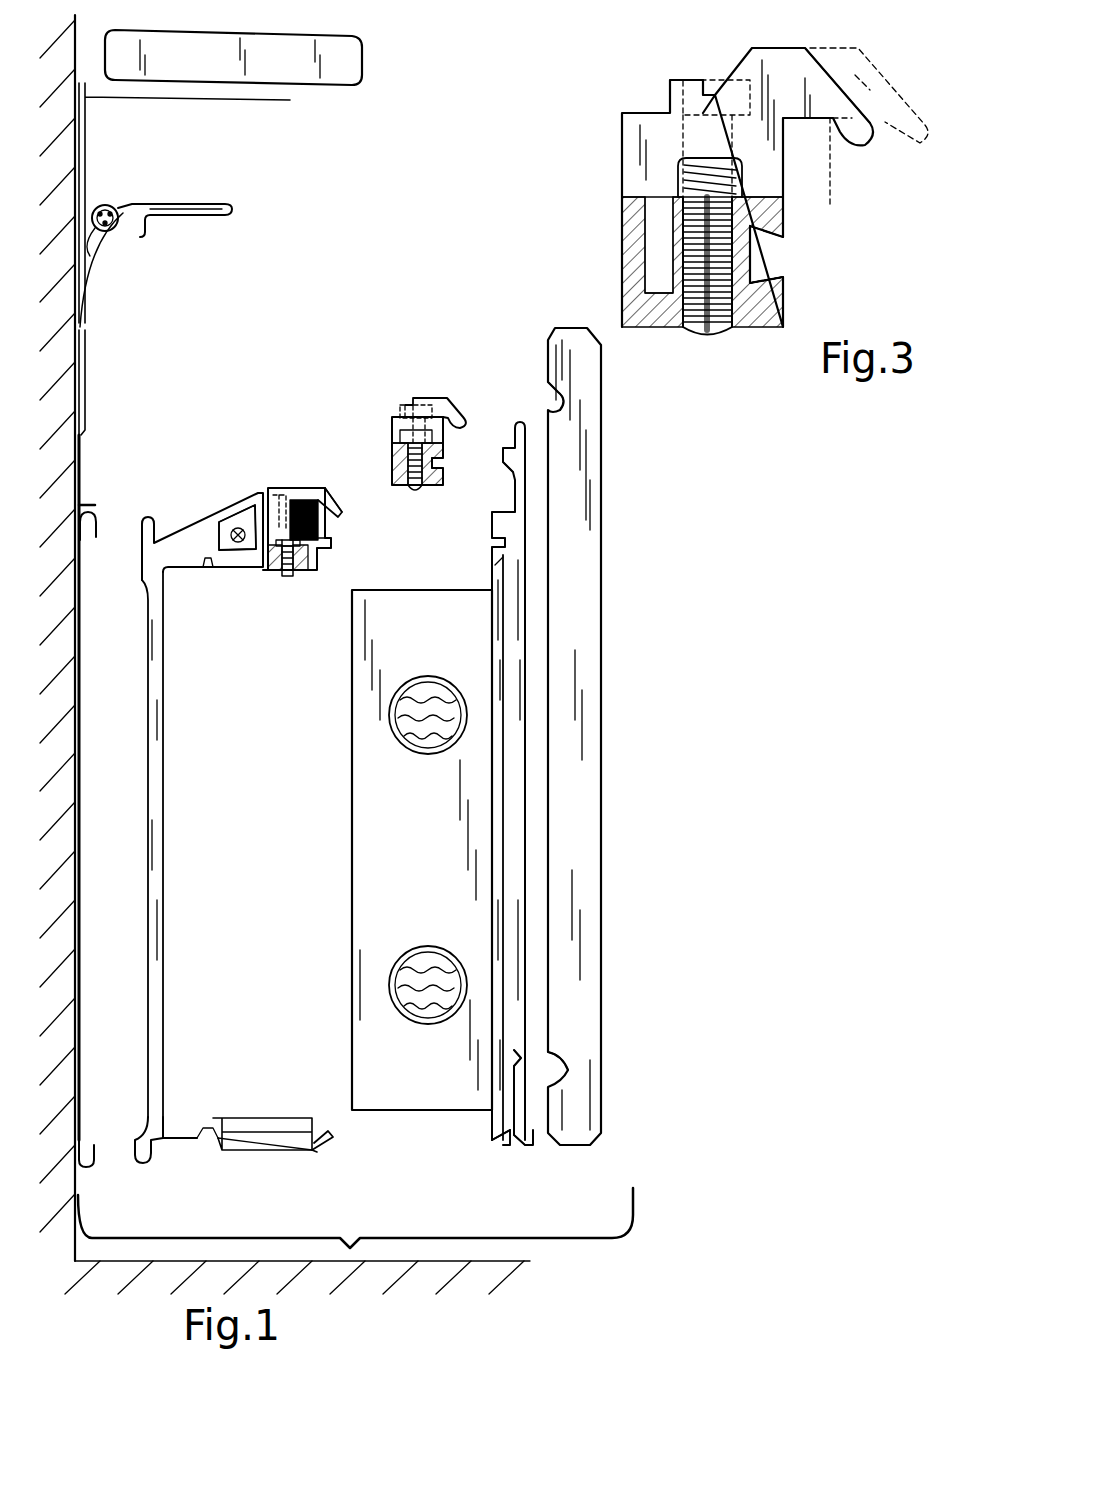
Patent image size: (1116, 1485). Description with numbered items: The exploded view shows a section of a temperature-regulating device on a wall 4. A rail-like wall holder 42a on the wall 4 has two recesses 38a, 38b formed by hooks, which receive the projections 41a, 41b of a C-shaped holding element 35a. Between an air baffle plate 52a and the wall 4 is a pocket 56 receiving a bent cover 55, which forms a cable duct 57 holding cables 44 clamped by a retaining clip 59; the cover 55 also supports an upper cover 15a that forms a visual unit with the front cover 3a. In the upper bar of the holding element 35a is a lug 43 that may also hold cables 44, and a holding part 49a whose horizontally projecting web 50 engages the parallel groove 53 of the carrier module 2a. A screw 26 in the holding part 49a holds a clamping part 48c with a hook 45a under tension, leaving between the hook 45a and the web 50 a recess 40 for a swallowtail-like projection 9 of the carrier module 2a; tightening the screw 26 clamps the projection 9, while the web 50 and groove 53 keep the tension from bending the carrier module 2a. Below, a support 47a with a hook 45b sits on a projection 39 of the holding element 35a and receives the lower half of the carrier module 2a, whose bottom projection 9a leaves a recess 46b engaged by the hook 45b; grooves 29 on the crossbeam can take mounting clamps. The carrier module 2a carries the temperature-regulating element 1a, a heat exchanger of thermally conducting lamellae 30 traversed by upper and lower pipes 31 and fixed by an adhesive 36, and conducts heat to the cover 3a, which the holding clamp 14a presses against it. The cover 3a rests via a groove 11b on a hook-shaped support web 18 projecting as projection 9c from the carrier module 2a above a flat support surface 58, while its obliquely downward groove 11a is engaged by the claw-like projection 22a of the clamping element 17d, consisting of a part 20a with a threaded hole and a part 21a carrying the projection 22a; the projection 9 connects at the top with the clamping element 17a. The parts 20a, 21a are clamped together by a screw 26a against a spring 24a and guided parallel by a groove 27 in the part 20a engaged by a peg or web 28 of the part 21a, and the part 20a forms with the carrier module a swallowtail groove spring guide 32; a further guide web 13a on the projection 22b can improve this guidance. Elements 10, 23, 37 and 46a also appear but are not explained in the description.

In FIG. 1, the temperature-regulating element 1a is at (350, 752).
In FIG. 1, the carrier module 2a is at (527, 648).
In FIG. 1, the front cover 3a is at (582, 705).
In FIG. 1, the wall 4 is at (62, 686).
In FIG. 1, the swallowtail-like projection 9 is at (494, 526).
In FIG. 1, the swallowtail-like projection 9a is at (484, 1150).
In FIG. 1, the projection 9c is at (534, 1099).
In FIG. 1, the recess 10 is at (490, 548).
In FIG. 1, the groove 11a is at (566, 404).
In FIG. 1, the groove 11b is at (570, 1066).
In FIG. 3, the guide web 13a is at (835, 172).
In FIG. 1, the holding clamp 14a is at (430, 392).
In FIG. 3, the holding clamp 14a is at (605, 150).
In FIG. 1, the upper cover 15a is at (355, 45).
In FIG. 1, the clamping element 17a is at (300, 486).
In FIG. 1, the clamping element 17d is at (449, 412).
In FIG. 3, the clamping element 17d is at (785, 212).
In FIG. 1, the support web 18 is at (527, 1050).
In FIG. 1, the part having a threaded hole 20a is at (425, 488).
In FIG. 3, the part having a threaded hole 20a is at (768, 286).
In FIG. 1, the part having a claw-like projection 21a is at (390, 445).
In FIG. 3, the part having a claw-like projection 21a is at (648, 130).
In FIG. 1, the claw-like projection 22a is at (464, 414).
In FIG. 3, the claw-like projection 22a is at (770, 72).
In FIG. 3, the projection 22b is at (875, 79).
In FIG. 1, the frame profile 23 is at (520, 420).
In FIG. 3, the spring 24a is at (680, 175).
In FIG. 1, the screw 26 is at (278, 580).
In FIG. 3, the screw 26a is at (683, 92).
In FIG. 3, the groove 27 is at (650, 260).
In FIG. 3, the peg or web 28 is at (662, 226).
In FIG. 1, the grooves 29 is at (208, 570).
In FIG. 1, the thermally conducting lamellae 30 is at (433, 819).
In FIG. 1, the pipes 31 is at (430, 946).
In FIG. 1, the swallowtail groove spring guide 32 is at (442, 464).
In FIG. 3, the swallowtail groove spring guide 32 is at (770, 255).
In FIG. 1, the holding element 35a is at (166, 750).
In FIG. 1, the adhesive 36 is at (500, 860).
In FIG. 1, the floor 37 is at (410, 1298).
In FIG. 1, the recess 38a is at (84, 542).
In FIG. 1, the recess 38b is at (86, 1140).
In FIG. 1, the projection 39 is at (318, 1160).
In FIG. 1, the recess 40 is at (332, 548).
In FIG. 1, the projection 41a is at (143, 518).
In FIG. 1, the projection 41b is at (132, 1140).
In FIG. 1, the wall holder 42a is at (82, 790).
In FIG. 1, the lug 43 is at (222, 528).
In FIG. 1, the cables 44 is at (115, 232).
In FIG. 1, the hook 45a is at (337, 513).
In FIG. 1, the hook 45b is at (336, 1140).
In FIG. 1, the upper rib 46a is at (507, 500).
In FIG. 1, the recess 46b is at (506, 1147).
In FIG. 1, the support 47a is at (252, 1142).
In FIG. 1, the clamping part 48c is at (333, 500).
In FIG. 1, the holding part 49a is at (290, 580).
In FIG. 1, the web 50 is at (302, 572).
In FIG. 1, the air baffle plate 52a is at (140, 228).
In FIG. 1, the parallel groove 53 is at (506, 541).
In FIG. 1, the cover 55 is at (88, 158).
In FIG. 1, the pocket 56 is at (86, 376).
In FIG. 1, the cable duct 57 is at (92, 262).
In FIG. 1, the flat support surface 58 is at (522, 1150).
In FIG. 1, the retaining clip 59 is at (222, 215).